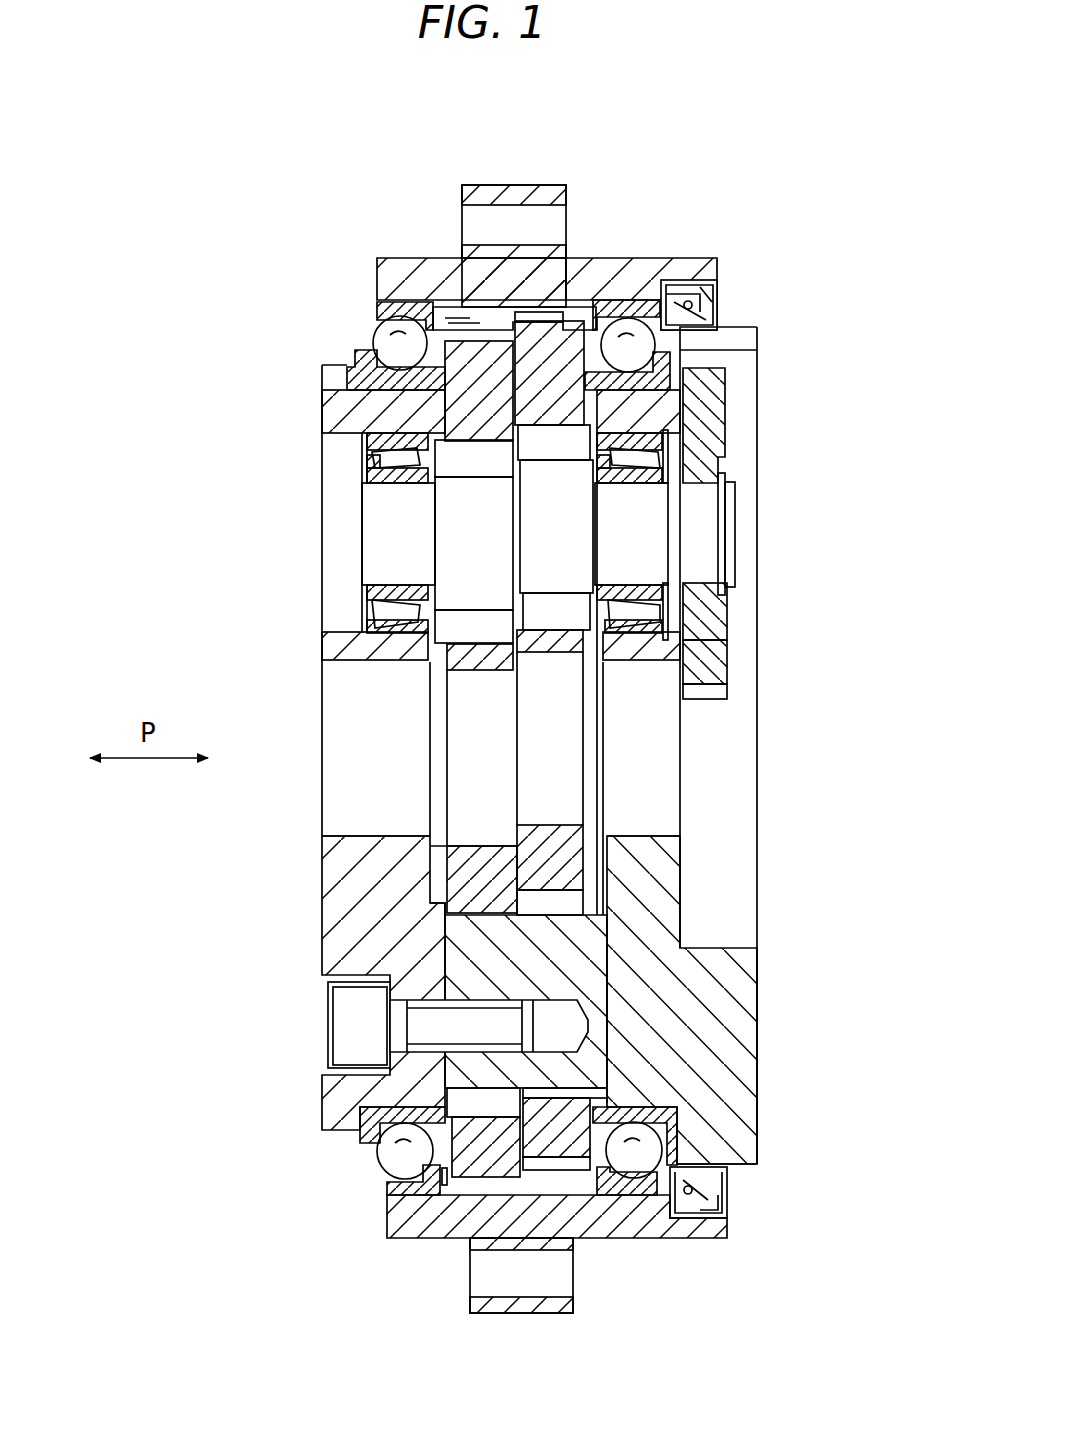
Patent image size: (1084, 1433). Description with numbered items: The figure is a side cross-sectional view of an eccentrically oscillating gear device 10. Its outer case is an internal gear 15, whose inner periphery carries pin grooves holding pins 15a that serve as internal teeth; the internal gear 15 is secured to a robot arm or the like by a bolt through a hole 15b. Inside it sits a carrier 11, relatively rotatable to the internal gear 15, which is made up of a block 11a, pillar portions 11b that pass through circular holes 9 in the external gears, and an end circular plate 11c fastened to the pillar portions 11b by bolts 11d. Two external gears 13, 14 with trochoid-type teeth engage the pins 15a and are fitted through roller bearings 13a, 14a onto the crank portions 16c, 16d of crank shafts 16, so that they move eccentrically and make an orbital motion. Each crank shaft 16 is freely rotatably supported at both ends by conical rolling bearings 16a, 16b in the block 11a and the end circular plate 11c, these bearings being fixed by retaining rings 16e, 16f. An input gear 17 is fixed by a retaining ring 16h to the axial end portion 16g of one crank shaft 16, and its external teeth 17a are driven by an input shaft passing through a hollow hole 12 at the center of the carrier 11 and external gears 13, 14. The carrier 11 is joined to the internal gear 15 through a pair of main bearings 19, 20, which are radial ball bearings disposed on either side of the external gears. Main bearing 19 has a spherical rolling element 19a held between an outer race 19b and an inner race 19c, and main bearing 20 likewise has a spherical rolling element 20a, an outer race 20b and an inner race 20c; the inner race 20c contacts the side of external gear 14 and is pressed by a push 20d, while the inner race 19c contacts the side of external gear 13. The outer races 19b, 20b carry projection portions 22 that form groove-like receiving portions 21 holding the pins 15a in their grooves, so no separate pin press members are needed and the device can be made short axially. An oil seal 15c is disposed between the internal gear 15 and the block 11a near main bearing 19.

The eccentrically oscillating gear device 10 is at (724, 216).
The receiving portion 21 is at (560, 320).
The external gear 13 is at (578, 322).
The pins 15a is at (473, 315).
The internal gear 15 is at (378, 286).
The main bearing 20 is at (358, 330).
The main bearing 19 is at (678, 340).
The push 20d is at (352, 378).
The projection portion 22 is at (678, 360).
The external gear 14 is at (450, 395).
The roller bearing 14a is at (467, 440).
The roller bearing 13a is at (592, 355).
The retaining ring 16f is at (395, 455).
The retaining ring 16e is at (615, 458).
The crank portion 16c is at (587, 495).
The crank portion 16d is at (447, 540).
The crank shaft 16 is at (674, 530).
The axial end portion 16g is at (725, 553).
The retaining ring 16h is at (735, 580).
The conical rolling bearing 16b is at (395, 612).
The conical rolling bearing 16a is at (684, 620).
The input gear 17 is at (718, 665).
The external teeth 17a is at (720, 695).
The hollow hole 12 is at (320, 795).
The circular holes 9 is at (520, 905).
The end circular plate 11c is at (335, 940).
The pillar portions 11b is at (588, 968).
The bolts 11d is at (338, 1025).
The block 11a is at (745, 1020).
The carrier 11 is at (764, 1075).
The inner race 20c is at (360, 1115).
The inner race 19c is at (680, 1115).
The spherical rolling element 20a is at (393, 1150).
The spherical rolling element 19a is at (654, 1150).
The outer race 20b is at (385, 1190).
The oil seal 15c is at (718, 1205).
The hole 15b is at (475, 1280).
The outer race 19b is at (625, 1190).